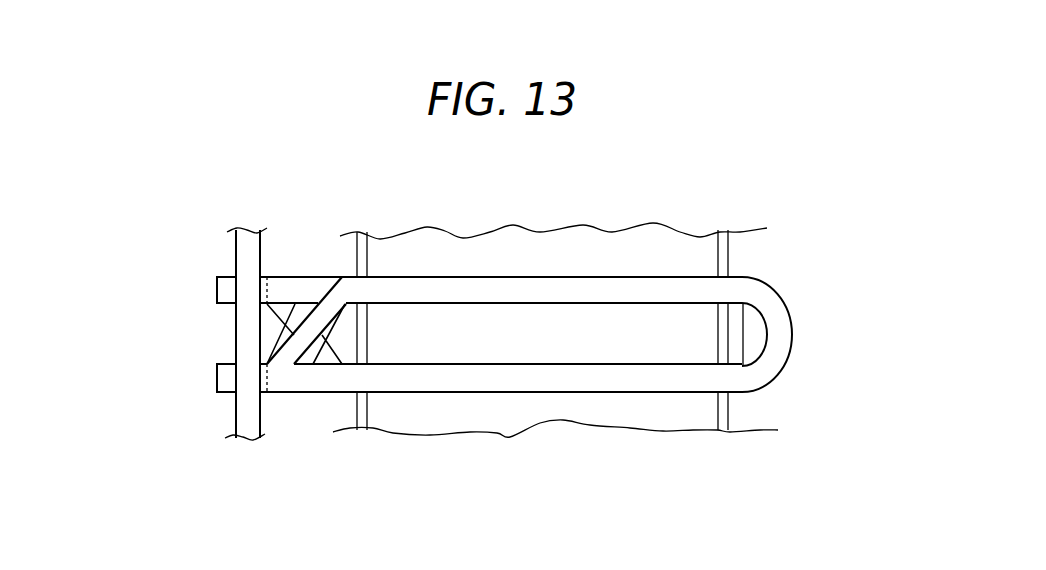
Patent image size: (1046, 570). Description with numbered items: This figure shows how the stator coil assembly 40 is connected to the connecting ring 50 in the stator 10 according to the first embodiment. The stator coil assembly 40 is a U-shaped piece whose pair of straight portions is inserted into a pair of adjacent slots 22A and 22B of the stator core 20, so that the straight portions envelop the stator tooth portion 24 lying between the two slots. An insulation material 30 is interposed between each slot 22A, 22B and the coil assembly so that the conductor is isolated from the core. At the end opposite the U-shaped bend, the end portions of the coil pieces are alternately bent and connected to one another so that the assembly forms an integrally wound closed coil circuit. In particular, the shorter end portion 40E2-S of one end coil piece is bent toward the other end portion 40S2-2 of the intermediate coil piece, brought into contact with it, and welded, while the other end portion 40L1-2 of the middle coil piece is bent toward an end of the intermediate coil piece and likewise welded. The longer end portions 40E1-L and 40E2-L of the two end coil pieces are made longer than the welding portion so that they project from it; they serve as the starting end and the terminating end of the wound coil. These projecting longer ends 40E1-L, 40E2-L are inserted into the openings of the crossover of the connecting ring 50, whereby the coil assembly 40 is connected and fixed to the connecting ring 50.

The stator 10 is at (747, 255).
The base member 20 is at (616, 245).
The slot 22A is at (625, 278).
The slot 22B is at (675, 393).
The stator tooth portion 24 is at (588, 348).
The insulation material 30 is at (448, 277).
The stator coil assembly 40 is at (783, 370).
The connecting ring 50 is at (236, 253).
The longer end portion 40E1-L is at (217, 289).
The longer end portion 40E2-L is at (217, 383).
The shorter end portion 40E2-S is at (329, 292).
The other end portion 40S2-2 is at (287, 290).
The other end portion 40L1-2 is at (326, 355).